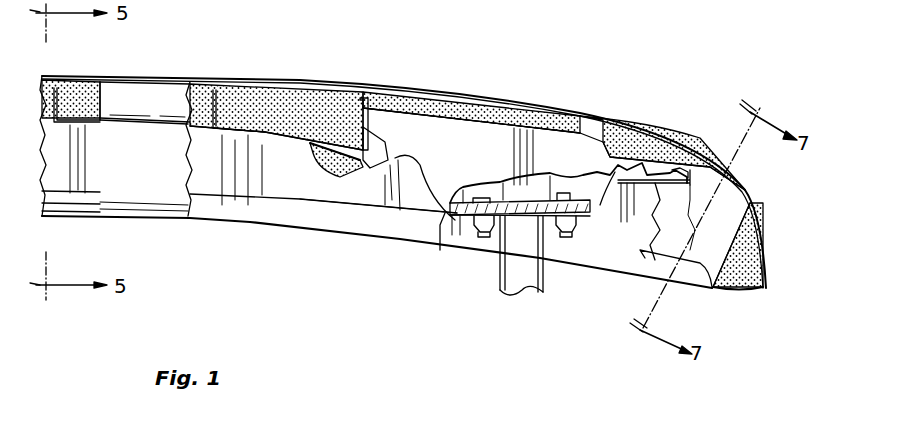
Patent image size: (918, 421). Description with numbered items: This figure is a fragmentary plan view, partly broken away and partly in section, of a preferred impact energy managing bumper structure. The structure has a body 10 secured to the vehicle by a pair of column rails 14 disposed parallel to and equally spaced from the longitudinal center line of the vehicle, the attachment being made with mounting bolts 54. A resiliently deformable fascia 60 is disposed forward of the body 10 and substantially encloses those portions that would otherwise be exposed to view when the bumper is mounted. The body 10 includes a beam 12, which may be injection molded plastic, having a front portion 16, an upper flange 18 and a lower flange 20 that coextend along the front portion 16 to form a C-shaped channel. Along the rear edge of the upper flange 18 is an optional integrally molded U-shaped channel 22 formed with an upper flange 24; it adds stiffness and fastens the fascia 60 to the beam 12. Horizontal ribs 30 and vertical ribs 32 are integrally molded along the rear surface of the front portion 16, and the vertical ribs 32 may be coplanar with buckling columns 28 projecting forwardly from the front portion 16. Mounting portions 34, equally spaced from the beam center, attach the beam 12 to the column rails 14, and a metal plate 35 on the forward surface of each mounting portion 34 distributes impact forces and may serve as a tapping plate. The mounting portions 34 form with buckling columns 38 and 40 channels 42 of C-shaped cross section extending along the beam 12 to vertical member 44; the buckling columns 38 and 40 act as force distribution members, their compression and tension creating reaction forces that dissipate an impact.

The body 10 is at (277, 245).
The beam 12 is at (733, 215).
The column rails 14 is at (500, 275).
The front portion 16 is at (260, 130).
The upper flange 18 is at (217, 187).
The lower flange 20 is at (578, 250).
The channel 22 is at (308, 178).
The upper flange 24 is at (360, 213).
The buckling columns 28 is at (68, 88).
The horizontal ribs 30 is at (636, 185).
The vertical ribs 32 is at (663, 170).
The mounting portions 34 is at (590, 195).
The metal plate 35 is at (513, 182).
The buckling column 38 is at (430, 123).
The buckling column 40 is at (533, 190).
The channels 42 is at (603, 123).
The vertical member 44 is at (350, 100).
The mounting bolts 54 is at (573, 222).
The fascia 60 is at (122, 78).